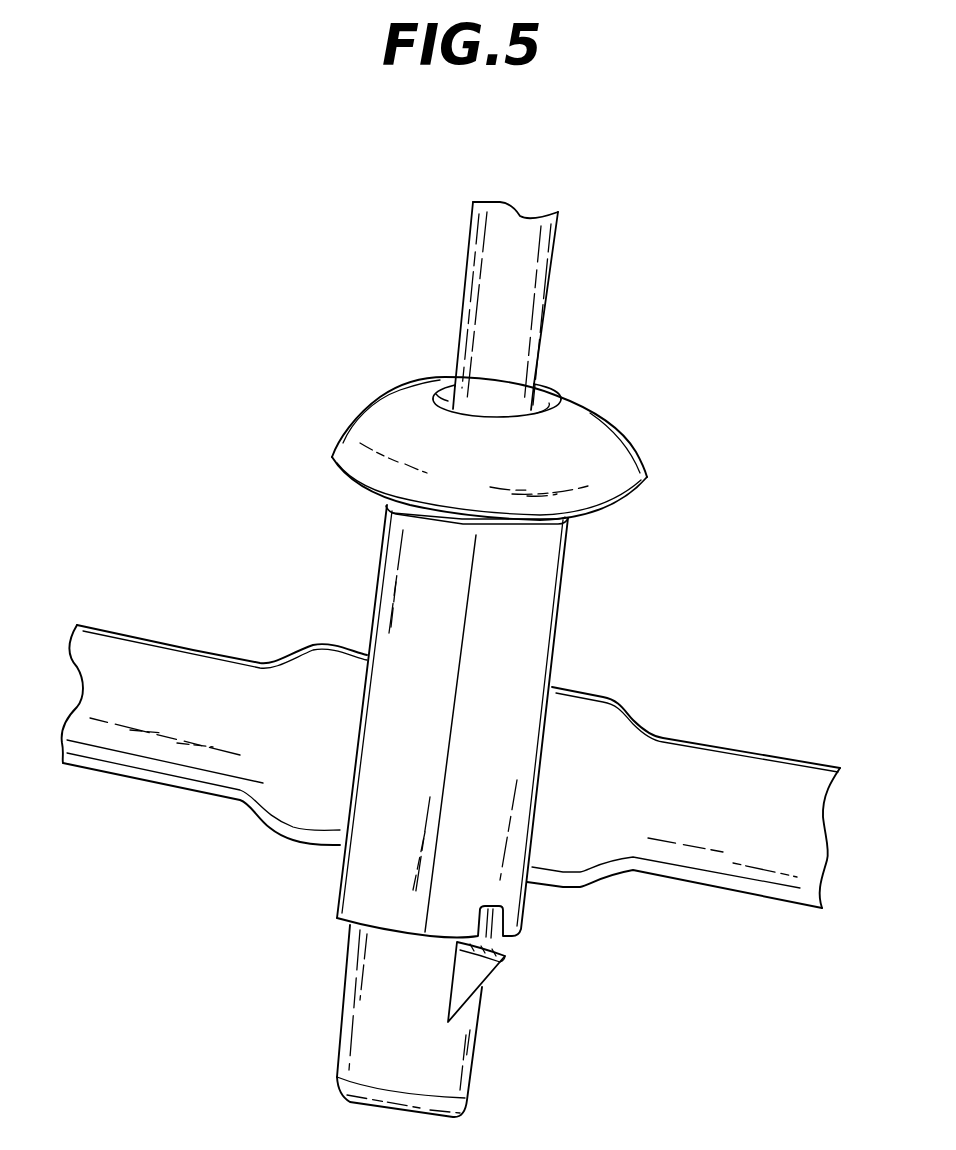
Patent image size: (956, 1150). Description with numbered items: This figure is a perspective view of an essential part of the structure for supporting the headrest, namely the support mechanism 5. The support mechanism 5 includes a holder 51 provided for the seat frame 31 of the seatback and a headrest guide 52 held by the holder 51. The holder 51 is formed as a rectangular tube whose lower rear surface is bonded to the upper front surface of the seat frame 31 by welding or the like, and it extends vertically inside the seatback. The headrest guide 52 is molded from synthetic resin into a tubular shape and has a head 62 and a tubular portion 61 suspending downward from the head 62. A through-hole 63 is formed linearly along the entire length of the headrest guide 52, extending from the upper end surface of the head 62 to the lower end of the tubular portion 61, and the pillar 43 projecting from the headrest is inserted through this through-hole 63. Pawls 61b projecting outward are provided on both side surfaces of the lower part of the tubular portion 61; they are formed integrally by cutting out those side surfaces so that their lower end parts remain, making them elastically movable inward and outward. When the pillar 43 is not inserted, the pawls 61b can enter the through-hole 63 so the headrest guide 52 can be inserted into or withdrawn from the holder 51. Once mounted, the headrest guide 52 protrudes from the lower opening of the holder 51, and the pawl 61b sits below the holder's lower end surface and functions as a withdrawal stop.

The pillar 43 is at (578, 248).
The support mechanism 5 is at (519, 651).
The headrest guide 52 is at (519, 442).
The holder 51 is at (597, 577).
The head 62 is at (377, 420).
The through-hole 63 is at (527, 390).
The seat frame 31 is at (782, 738).
The tubular portion 61 is at (322, 1018).
The pawl 61b is at (525, 1012).